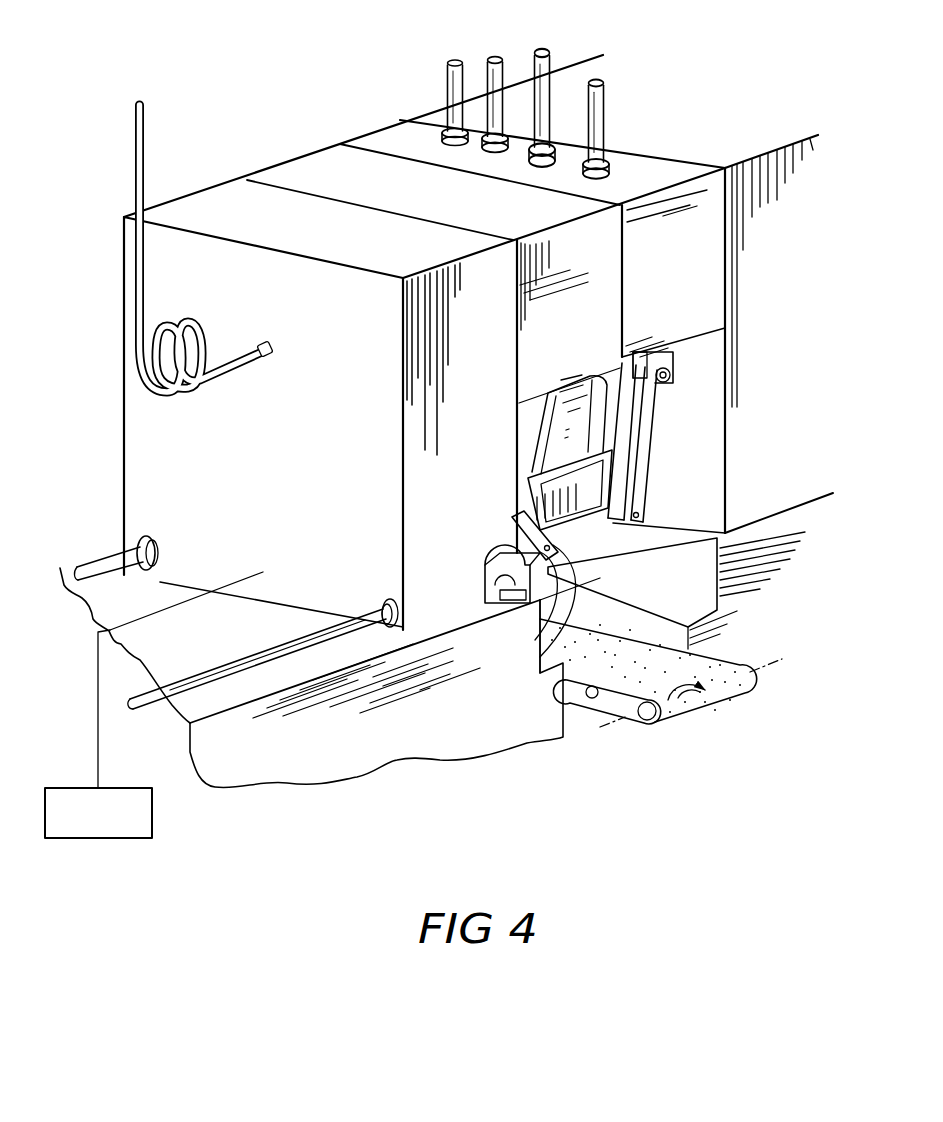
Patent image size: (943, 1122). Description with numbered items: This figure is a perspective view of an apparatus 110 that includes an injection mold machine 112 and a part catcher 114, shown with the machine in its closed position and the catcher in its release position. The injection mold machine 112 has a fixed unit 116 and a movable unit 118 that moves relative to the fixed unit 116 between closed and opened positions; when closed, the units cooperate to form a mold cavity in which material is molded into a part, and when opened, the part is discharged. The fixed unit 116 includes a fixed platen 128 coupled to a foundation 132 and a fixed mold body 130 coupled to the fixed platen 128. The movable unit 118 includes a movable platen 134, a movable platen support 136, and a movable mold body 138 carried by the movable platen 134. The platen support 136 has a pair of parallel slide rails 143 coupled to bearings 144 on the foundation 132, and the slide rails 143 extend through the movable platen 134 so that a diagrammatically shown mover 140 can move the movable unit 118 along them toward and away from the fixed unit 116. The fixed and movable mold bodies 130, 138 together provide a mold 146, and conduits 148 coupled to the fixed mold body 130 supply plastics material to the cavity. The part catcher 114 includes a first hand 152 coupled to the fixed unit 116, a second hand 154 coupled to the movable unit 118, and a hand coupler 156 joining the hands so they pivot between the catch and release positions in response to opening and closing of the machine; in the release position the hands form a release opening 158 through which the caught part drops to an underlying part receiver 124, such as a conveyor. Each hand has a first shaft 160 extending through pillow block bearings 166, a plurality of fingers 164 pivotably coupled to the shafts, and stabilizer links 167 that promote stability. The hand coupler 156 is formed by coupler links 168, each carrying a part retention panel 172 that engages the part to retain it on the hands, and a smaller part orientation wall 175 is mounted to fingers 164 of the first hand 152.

The apparatus 110 is at (250, 108).
The injection mold machine 112 is at (320, 141).
The part catcher 114 is at (645, 558).
The fixed unit 116 is at (742, 352).
The movable unit 118 is at (306, 407).
The part receiver 124 is at (677, 715).
The fixed platen 128 is at (742, 453).
The fixed mold body 130 is at (675, 271).
The foundation 132 is at (740, 590).
The movable platen 134 is at (412, 420).
The movable platen support 136 is at (242, 646).
The movable mold body 138 is at (540, 322).
The mover 140 is at (153, 816).
The slide rails 143 is at (105, 560).
The bearings 144 is at (500, 567).
The mold 146 is at (337, 170).
The conduits 148 is at (487, 67).
The first hand 152 is at (700, 437).
The second hand 154 is at (540, 636).
The hand coupler 156 is at (601, 545).
The release opening 158 is at (560, 580).
The first shaft 160 is at (669, 377).
The fingers 164 is at (565, 503).
The bearings 166 is at (667, 360).
The stabilizer links 167 is at (627, 435).
The coupler links 168 is at (623, 518).
The part retention panels 172 is at (614, 487).
The smaller part orientation wall 175 is at (571, 395).